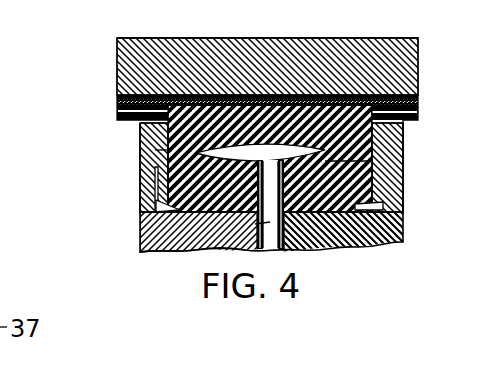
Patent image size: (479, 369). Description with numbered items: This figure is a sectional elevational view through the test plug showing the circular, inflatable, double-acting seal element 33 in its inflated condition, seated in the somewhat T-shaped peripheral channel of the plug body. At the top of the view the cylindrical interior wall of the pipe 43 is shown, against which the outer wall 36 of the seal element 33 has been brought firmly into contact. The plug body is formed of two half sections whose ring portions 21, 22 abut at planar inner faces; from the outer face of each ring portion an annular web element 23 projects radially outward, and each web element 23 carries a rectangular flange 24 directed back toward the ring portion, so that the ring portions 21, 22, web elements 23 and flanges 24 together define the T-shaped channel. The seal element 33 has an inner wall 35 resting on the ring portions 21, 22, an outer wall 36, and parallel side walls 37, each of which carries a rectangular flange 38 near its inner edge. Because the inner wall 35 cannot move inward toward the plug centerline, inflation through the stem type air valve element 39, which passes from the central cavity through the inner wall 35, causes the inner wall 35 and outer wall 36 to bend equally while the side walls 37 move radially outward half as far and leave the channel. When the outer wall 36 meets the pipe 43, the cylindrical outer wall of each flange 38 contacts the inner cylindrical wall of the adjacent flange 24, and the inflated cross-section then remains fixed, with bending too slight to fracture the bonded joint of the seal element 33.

The ring portion 21 is at (142, 235).
The ring portion 22 is at (312, 247).
The web element 23 is at (140, 182).
The flange 24 is at (140, 150).
The seal element 33 is at (157, 252).
The inner wall 35 is at (325, 247).
The outer wall 36 is at (200, 80).
The side wall 37 is at (140, 130).
The flange 38 is at (142, 198).
The air valve element 39 is at (213, 247).
The pipe 43 is at (357, 30).